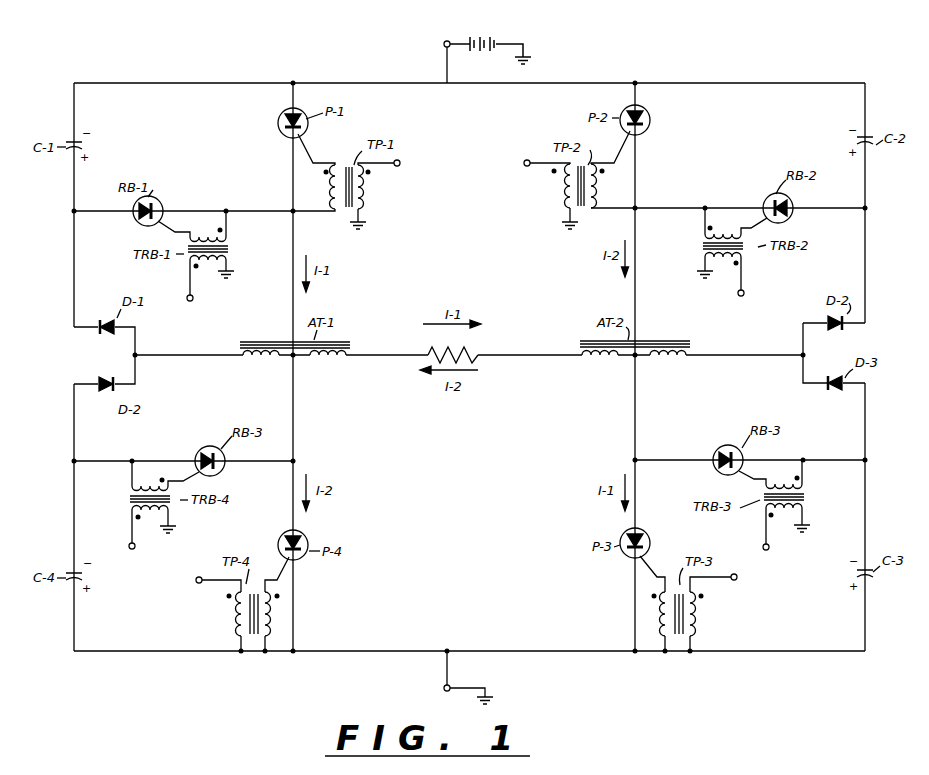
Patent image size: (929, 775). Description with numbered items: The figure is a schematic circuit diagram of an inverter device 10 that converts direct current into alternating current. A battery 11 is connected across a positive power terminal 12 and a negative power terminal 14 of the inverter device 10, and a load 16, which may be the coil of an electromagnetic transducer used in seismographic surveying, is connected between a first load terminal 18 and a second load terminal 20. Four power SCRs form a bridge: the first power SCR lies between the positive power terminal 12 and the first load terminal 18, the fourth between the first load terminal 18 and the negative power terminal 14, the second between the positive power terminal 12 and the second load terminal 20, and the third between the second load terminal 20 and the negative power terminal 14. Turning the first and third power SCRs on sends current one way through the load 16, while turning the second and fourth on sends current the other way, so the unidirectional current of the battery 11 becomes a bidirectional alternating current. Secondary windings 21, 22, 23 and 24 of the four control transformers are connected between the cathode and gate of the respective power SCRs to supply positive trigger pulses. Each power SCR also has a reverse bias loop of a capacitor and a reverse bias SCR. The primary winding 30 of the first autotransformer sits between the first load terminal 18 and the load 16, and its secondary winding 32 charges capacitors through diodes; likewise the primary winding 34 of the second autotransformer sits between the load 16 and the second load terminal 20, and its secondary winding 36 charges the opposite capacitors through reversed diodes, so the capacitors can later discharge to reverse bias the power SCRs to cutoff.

The inverter device 10 is at (52, 262).
The battery 11 is at (488, 40).
The positive power terminal 12 is at (447, 41).
The negative power terminal 14 is at (452, 686).
The load 16 is at (482, 351).
The first load terminal 18 is at (290, 362).
The second load terminal 20 is at (630, 360).
The secondary winding of control transformer TP-1 21 is at (331, 189).
The secondary winding of control transformer TP-2 22 is at (597, 194).
The secondary winding of control transformer TP-3 23 is at (658, 617).
The secondary winding of control transformer TP-4 24 is at (266, 615).
The primary winding of first autotransformer AT-1 30 is at (348, 350).
The secondary winding of first autotransformer AT-1 32 is at (250, 348).
The primary winding of second autotransformer AT-2 34 is at (582, 348).
The secondary winding of second autotransformer AT-2 36 is at (692, 350).